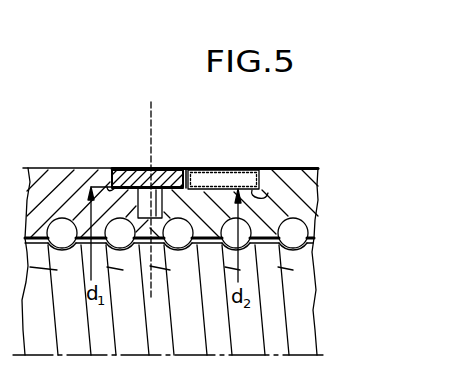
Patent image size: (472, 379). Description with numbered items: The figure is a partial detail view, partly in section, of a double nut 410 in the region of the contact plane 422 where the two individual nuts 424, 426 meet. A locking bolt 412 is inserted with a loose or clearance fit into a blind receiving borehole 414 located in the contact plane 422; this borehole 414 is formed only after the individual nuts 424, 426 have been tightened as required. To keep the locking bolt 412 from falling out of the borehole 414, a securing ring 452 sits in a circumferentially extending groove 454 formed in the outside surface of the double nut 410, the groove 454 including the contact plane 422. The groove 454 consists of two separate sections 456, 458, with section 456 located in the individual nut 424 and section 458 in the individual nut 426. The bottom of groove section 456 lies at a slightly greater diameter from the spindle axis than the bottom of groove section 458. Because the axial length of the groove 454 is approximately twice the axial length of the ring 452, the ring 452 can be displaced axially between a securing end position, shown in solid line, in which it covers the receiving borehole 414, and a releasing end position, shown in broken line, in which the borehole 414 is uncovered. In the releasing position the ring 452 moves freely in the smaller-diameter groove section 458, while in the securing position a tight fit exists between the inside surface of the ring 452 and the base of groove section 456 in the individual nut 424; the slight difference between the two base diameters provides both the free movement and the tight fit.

The double nut 410 is at (302, 140).
The locking bolt 412 is at (133, 168).
The blind receiving borehole 414 is at (162, 204).
The contact plane 422 is at (153, 102).
The individual nut 424 is at (50, 186).
The individual nut 426 is at (316, 192).
The securing ring 452 is at (172, 170).
The circumferentially extending groove 454 is at (214, 170).
The groove section 456 is at (107, 187).
The groove section 458 is at (268, 193).